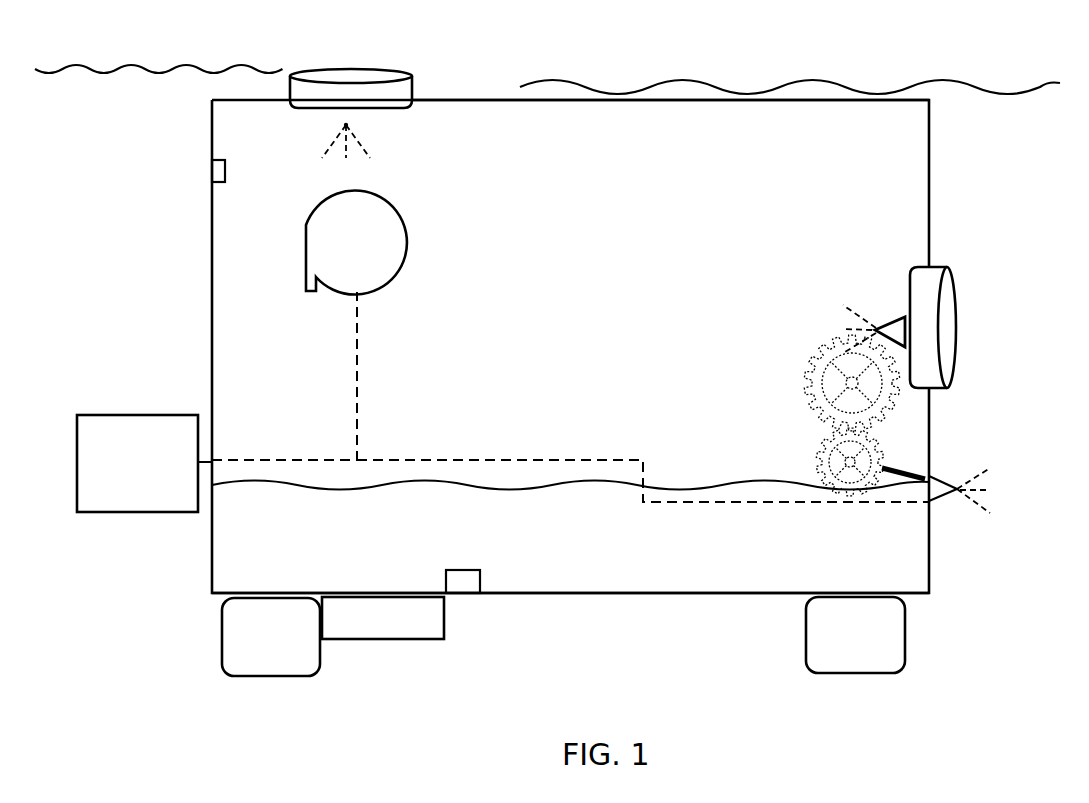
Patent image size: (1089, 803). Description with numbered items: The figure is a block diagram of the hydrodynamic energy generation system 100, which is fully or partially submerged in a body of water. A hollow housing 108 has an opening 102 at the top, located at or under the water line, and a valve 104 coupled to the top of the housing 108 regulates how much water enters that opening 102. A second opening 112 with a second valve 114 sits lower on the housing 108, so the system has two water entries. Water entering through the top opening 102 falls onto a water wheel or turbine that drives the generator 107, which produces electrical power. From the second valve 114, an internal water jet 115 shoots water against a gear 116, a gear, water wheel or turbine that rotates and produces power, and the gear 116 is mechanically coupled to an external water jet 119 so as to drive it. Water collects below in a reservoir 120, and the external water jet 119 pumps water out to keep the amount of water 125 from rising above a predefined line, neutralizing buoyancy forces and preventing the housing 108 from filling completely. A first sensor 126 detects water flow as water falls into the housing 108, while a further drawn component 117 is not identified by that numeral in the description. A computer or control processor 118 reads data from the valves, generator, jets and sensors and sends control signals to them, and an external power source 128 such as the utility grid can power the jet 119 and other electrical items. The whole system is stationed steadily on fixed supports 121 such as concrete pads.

The hydrodynamic energy generation system 100 is at (192, 170).
The opening 102 is at (375, 94).
The valve 104 is at (670, 84).
The generator 107 is at (396, 243).
The housing 108 is at (522, 346).
The second opening 112 is at (968, 307).
The second valve 114 is at (930, 434).
The internal water jet 115 is at (874, 299).
The gear 116 is at (803, 415).
The sensor 117 is at (492, 559).
The computer or control processor 118 is at (383, 657).
The external water jet 119 is at (962, 518).
The reservoir 120 is at (570, 632).
The fixed support 121 is at (588, 674).
The amount of water 125 is at (570, 397).
The first sensor 126 is at (256, 154).
The external power source 128 is at (144, 501).